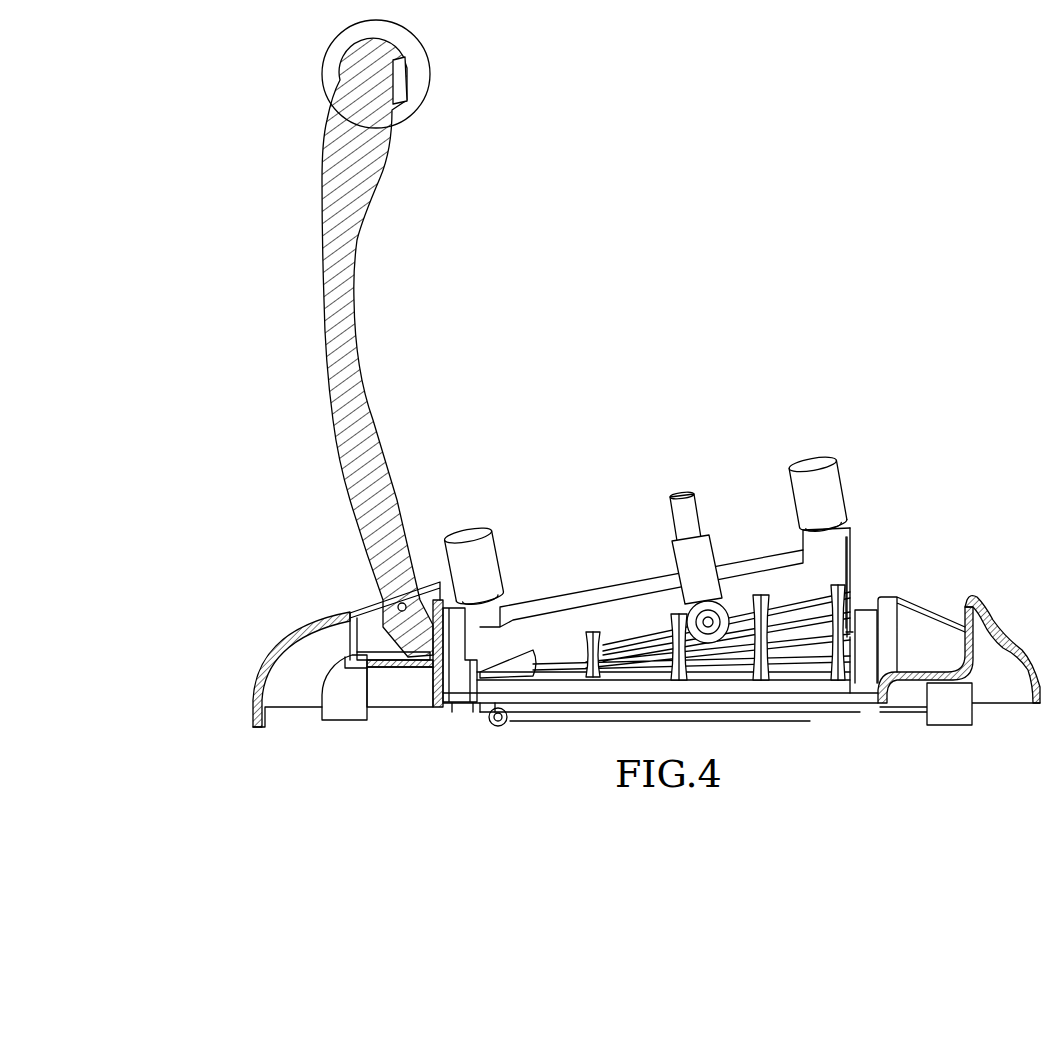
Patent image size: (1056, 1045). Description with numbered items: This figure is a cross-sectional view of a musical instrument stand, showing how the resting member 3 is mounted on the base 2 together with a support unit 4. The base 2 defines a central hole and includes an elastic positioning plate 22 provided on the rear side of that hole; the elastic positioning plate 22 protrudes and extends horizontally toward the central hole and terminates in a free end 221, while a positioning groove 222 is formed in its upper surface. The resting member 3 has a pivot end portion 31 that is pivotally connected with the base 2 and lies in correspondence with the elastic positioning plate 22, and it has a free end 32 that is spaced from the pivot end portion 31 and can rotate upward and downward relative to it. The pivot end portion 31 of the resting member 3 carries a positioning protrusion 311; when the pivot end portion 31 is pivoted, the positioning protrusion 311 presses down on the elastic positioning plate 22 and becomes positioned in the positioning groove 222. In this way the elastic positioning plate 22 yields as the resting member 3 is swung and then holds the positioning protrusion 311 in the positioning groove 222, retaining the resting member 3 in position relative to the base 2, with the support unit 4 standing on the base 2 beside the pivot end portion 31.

The base 2 is at (260, 656).
The resting member 3 is at (322, 298).
The support unit 4 is at (848, 489).
The elastic positioning plate 22 is at (407, 655).
The pivot end portion 31 is at (412, 637).
The free end 32 is at (367, 58).
The free end 221 is at (443, 660).
The positioning groove 222 is at (408, 660).
The positioning protrusion 311 is at (368, 665).